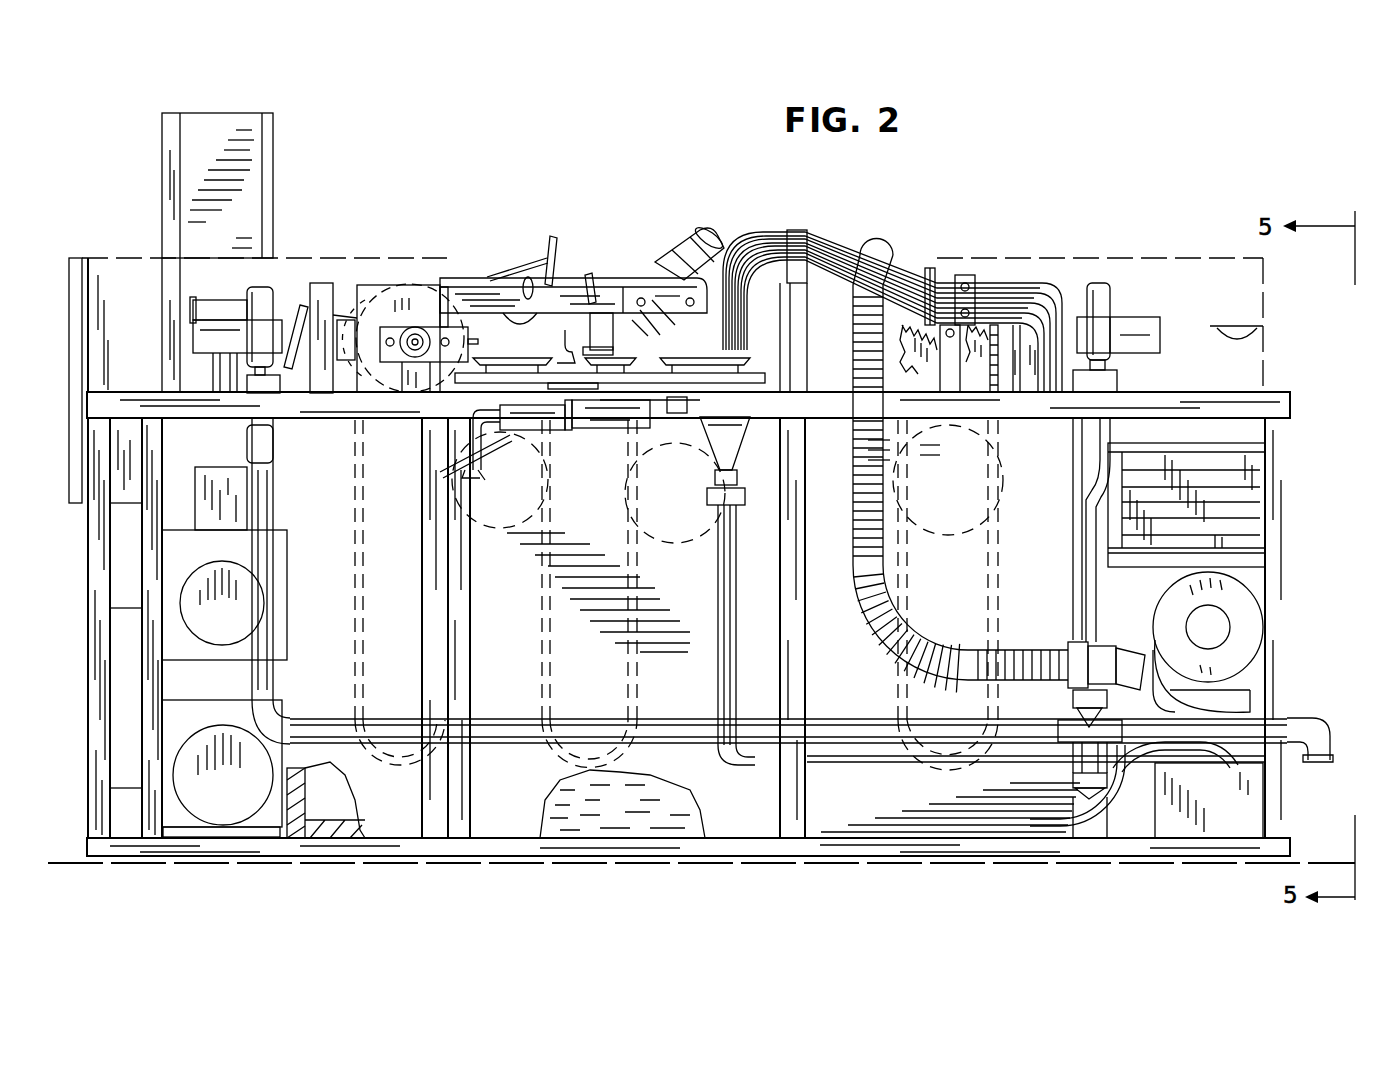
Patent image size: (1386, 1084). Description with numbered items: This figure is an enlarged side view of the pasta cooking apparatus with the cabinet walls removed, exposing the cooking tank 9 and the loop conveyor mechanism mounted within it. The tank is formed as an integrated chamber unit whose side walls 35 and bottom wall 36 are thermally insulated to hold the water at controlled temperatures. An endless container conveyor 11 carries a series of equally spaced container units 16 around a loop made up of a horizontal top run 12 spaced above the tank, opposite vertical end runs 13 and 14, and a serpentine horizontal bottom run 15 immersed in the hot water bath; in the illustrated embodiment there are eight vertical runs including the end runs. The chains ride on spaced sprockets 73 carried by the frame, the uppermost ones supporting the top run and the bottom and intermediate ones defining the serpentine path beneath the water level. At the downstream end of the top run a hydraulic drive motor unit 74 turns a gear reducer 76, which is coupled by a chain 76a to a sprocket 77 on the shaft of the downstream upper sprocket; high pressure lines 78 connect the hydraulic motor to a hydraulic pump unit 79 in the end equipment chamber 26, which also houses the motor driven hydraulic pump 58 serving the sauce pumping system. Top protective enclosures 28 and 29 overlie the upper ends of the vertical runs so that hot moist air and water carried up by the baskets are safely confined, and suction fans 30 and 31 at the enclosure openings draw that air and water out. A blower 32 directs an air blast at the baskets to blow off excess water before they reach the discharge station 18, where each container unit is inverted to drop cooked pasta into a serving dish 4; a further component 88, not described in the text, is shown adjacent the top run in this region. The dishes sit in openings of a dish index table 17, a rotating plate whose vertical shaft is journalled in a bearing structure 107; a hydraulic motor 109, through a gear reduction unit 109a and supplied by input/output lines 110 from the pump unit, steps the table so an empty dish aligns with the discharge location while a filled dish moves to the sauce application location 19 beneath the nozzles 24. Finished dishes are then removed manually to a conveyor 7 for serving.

The serving dish 4 is at (566, 342).
The conveyor 7 is at (838, 428).
The cooking tank 9 is at (622, 818).
The endless container conveyor 11 is at (372, 626).
The horizontal top run 12 is at (410, 275).
The vertical end run 13 is at (355, 565).
The vertical end run 14 is at (990, 550).
The serpentine horizontal bottom run 15 is at (538, 635).
The container unit 16 is at (553, 273).
The dish index table 17 is at (667, 386).
The discharge station 18 is at (695, 341).
The sauce application location 19 is at (769, 341).
The nozzle 24 is at (783, 345).
The end equipment chamber 26 is at (125, 830).
The top protective enclosure 28 is at (320, 250).
The top protective enclosure 29 is at (1070, 257).
The suction fan 30 is at (258, 285).
The suction fan 31 is at (1098, 285).
The blower 32 is at (1222, 640).
The side wall 35 is at (290, 840).
The bottom wall 36 is at (612, 840).
The motor driven hydraulic pump 58 is at (242, 811).
The sprocket 73 is at (385, 396).
The hydraulic drive motor unit 74 is at (200, 310).
The gear reducer 76 is at (303, 302).
The chain 76a is at (347, 303).
The sprocket 77 is at (440, 285).
The high pressure line 78 is at (212, 388).
The hydraulic pump unit 79 is at (248, 637).
The rod 88 is at (558, 275).
The bearing structure 107 is at (608, 392).
The hydraulic motor 109 is at (462, 462).
The gear reduction unit 109a is at (588, 487).
The input/output line 110 is at (470, 472).